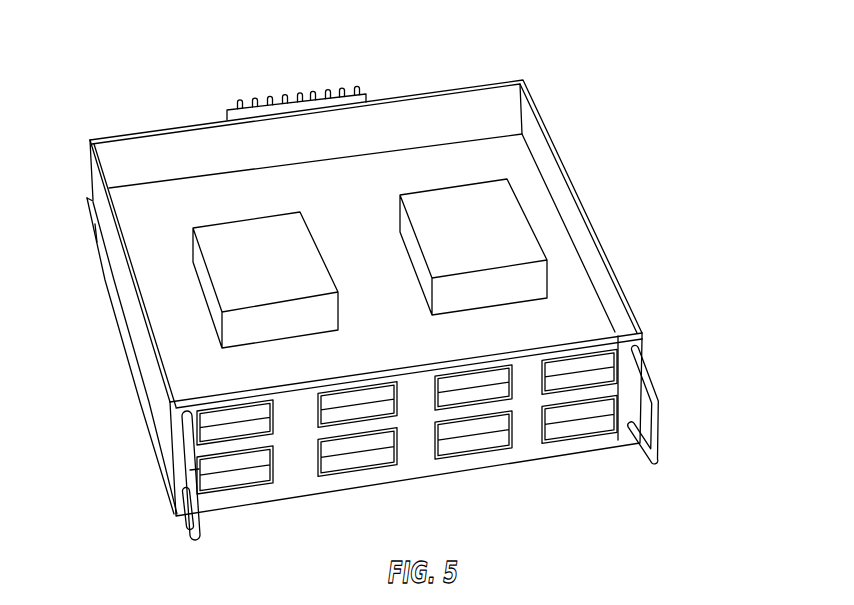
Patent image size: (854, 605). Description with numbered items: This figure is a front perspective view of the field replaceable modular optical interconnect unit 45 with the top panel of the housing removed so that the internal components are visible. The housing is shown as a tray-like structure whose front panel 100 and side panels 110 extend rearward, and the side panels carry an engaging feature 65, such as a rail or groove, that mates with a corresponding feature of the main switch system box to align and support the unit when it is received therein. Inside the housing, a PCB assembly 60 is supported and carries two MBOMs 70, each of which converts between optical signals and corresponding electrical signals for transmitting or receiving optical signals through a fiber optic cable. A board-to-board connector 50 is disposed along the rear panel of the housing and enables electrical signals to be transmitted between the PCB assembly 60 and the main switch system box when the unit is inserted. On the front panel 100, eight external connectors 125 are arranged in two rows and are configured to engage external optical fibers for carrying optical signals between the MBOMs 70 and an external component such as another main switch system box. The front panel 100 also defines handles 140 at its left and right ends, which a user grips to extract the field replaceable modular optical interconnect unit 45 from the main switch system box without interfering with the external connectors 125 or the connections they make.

The field replaceable modular optical interconnect unit 45 is at (385, 286).
The board-to-board connector 50 is at (253, 103).
The PCB assembly 60 is at (470, 160).
The engaging feature 65 is at (123, 303).
The MBOM 70 is at (255, 263).
The front panel 100 is at (453, 441).
The side panel 110 is at (140, 383).
The external connector 125 is at (238, 482).
The handle 140 is at (197, 483).